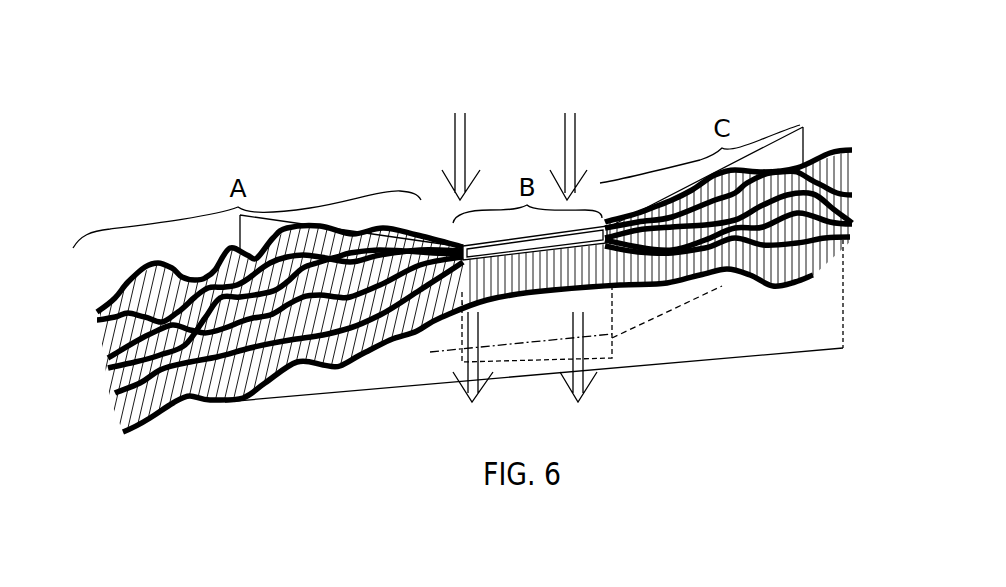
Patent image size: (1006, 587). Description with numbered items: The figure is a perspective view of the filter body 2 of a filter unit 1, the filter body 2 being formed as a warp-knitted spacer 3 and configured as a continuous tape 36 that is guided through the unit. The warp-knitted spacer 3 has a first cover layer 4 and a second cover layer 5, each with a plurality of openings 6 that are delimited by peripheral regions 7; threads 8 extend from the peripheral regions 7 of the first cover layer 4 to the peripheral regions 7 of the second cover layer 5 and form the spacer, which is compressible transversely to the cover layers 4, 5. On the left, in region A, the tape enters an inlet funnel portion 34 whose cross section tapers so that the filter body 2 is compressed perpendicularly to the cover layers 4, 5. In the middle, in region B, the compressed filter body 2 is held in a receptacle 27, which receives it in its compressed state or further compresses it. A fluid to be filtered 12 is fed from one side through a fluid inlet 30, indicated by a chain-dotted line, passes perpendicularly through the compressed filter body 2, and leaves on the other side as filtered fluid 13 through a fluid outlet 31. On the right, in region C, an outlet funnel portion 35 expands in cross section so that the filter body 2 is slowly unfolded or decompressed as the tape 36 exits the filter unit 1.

The filter unit 1 is at (350, 182).
The filter body 2 is at (847, 164).
The warp-knitted spacer 3 is at (96, 399).
The first cover layer 4 is at (111, 389).
The second cover layer 5 is at (110, 432).
The openings 6 is at (813, 229).
The peripheral regions 7 is at (850, 150).
The threads 8 is at (813, 257).
The fluid to be filtered 12 is at (563, 152).
The filtered fluid 13 is at (203, 253).
The receptacle 27 is at (479, 233).
The fluid inlet 30 is at (588, 230).
The fluid outlet 31 is at (604, 362).
The inlet funnel portion 34 is at (280, 203).
The outlet funnel portion 35 is at (783, 124).
The tape 36 is at (100, 306).